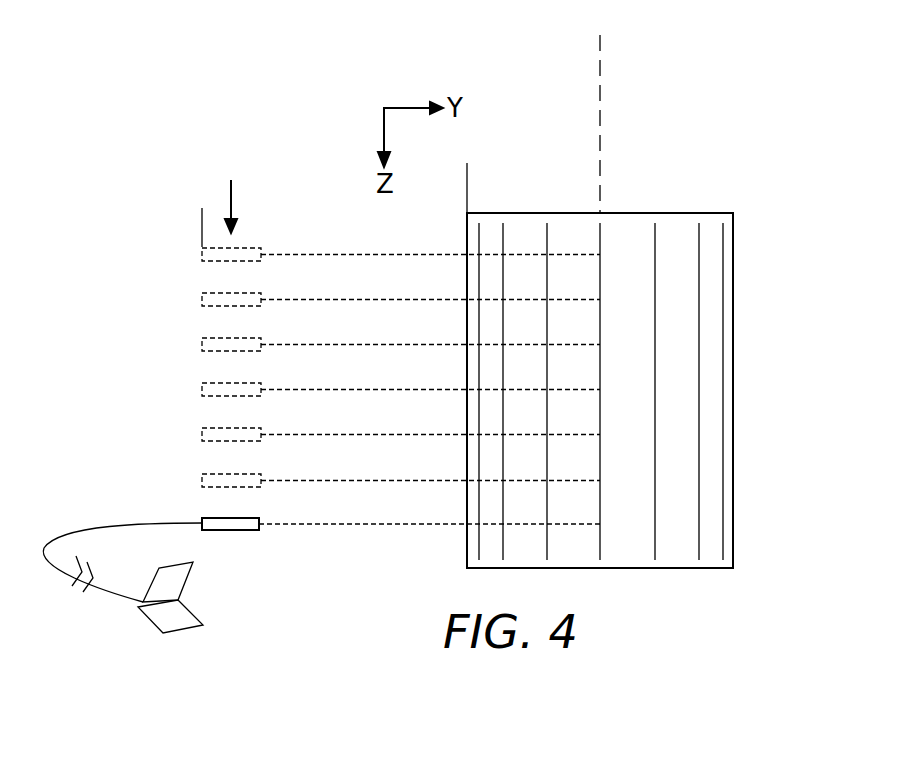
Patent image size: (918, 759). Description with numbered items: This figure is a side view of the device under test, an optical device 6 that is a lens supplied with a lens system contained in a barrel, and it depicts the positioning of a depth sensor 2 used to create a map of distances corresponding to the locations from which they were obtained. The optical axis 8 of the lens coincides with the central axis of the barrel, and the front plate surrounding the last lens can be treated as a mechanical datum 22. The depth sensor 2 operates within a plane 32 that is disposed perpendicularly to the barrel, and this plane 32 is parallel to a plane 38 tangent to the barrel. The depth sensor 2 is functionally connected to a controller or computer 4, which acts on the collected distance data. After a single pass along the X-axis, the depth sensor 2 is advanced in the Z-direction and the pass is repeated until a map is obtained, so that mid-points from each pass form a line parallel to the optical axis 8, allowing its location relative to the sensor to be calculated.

The depth sensor 2 is at (235, 530).
The controller or computer 4 is at (190, 608).
The optical device 6 is at (733, 405).
The optical axis 8 is at (600, 88).
The mechanical datum 22 is at (672, 213).
The plane 32 is at (202, 215).
The plane 38 is at (467, 185).